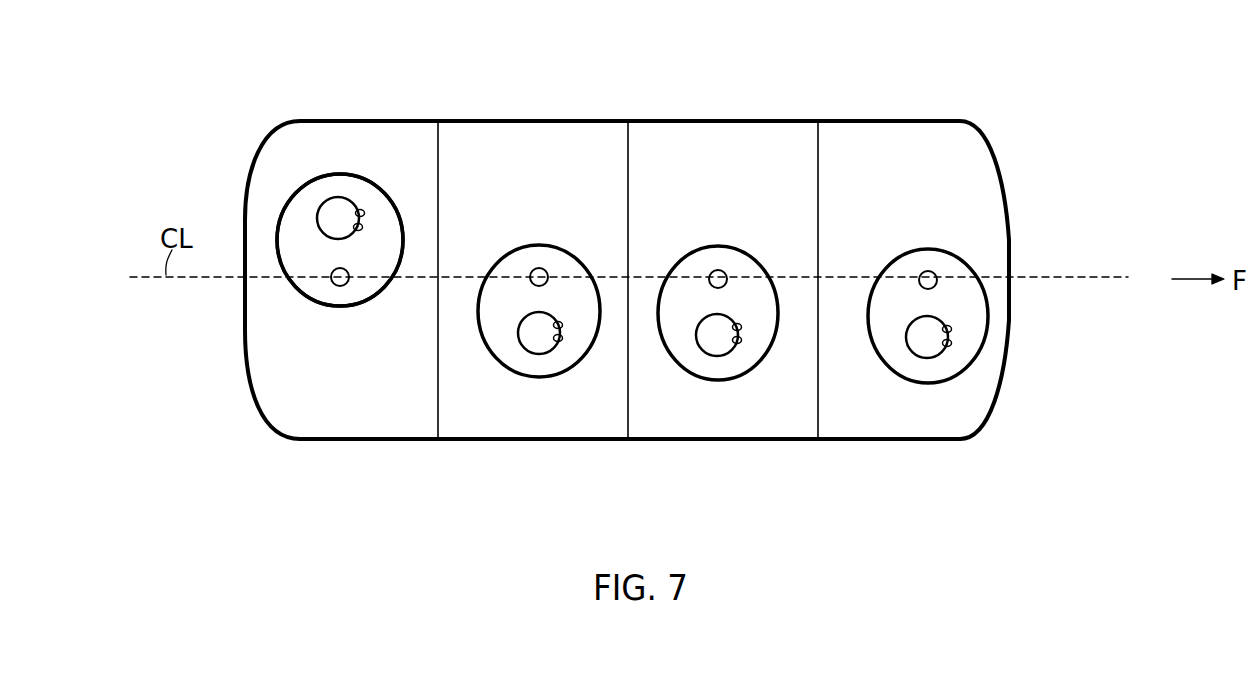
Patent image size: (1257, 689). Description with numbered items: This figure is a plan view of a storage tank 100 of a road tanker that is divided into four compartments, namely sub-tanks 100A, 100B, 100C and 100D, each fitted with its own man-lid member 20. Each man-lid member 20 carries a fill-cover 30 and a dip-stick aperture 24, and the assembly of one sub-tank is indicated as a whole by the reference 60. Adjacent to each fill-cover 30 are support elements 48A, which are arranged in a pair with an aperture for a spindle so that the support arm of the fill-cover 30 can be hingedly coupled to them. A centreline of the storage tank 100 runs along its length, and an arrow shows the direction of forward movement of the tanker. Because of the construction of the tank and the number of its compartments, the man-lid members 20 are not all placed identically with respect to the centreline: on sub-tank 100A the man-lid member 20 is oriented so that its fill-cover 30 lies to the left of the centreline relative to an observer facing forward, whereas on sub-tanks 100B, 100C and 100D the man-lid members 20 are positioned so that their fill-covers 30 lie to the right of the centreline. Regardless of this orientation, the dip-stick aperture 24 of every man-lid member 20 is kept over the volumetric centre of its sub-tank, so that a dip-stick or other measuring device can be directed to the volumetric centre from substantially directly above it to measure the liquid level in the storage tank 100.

The storage tank 100 is at (315, 440).
The sub-tank 100A is at (375, 422).
The sub-tank 100B is at (487, 422).
The sub-tank 100C is at (665, 418).
The sub-tank 100D is at (880, 424).
The man-lid member 20 is at (380, 206).
The fill-cover 30 is at (335, 212).
The dip-stick aperture 24 is at (333, 283).
The support elements 48A is at (356, 224).
The assembly unit 60 is at (415, 75).